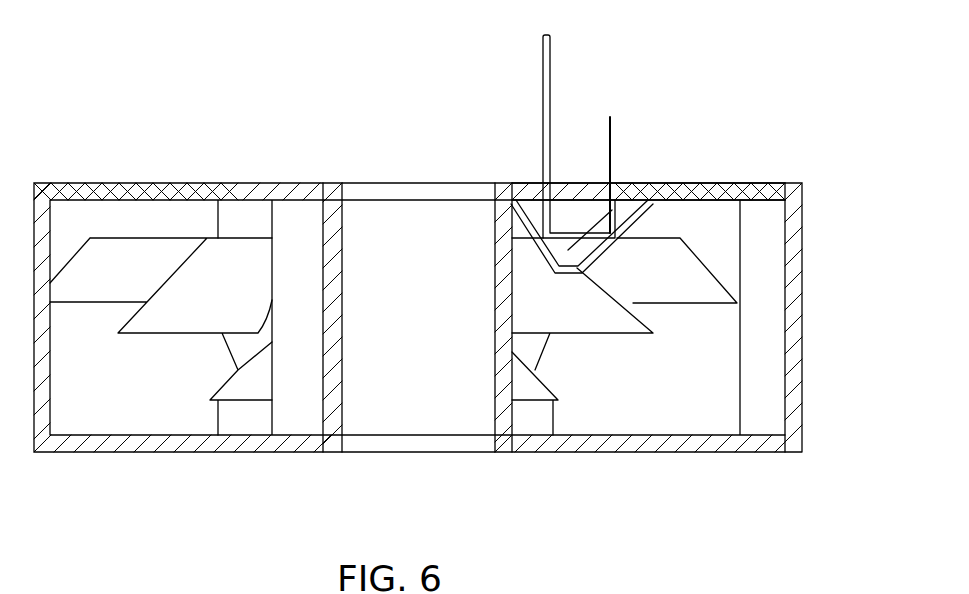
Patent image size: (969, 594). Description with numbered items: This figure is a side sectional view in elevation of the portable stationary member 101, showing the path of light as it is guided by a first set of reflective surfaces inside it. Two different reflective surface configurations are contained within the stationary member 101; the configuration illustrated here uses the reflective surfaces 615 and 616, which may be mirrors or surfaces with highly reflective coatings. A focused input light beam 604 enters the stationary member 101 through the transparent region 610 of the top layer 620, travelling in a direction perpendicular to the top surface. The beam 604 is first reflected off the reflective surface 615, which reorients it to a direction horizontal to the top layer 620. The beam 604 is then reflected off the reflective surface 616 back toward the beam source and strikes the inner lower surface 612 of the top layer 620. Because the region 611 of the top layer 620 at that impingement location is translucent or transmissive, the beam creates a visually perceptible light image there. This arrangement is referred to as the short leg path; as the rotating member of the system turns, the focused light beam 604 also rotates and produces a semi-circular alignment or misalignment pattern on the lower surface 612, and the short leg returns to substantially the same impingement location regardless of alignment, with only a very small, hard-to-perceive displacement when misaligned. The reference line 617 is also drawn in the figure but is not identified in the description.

The stationary member 101 is at (571, 453).
The light beam 604 is at (542, 60).
The transparent region 610 is at (540, 182).
The translucent region 611 is at (662, 182).
The lower surface 612 is at (680, 202).
The reflective surface 615 is at (569, 275).
The reflective surface 616 is at (620, 251).
The center axis 617 is at (610, 159).
The top layer 620 is at (809, 197).